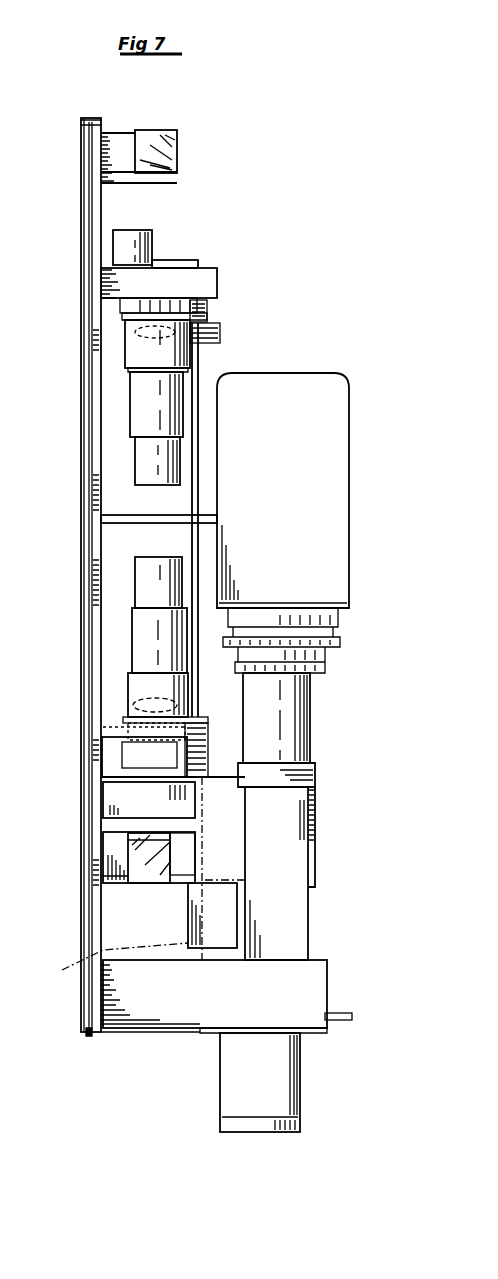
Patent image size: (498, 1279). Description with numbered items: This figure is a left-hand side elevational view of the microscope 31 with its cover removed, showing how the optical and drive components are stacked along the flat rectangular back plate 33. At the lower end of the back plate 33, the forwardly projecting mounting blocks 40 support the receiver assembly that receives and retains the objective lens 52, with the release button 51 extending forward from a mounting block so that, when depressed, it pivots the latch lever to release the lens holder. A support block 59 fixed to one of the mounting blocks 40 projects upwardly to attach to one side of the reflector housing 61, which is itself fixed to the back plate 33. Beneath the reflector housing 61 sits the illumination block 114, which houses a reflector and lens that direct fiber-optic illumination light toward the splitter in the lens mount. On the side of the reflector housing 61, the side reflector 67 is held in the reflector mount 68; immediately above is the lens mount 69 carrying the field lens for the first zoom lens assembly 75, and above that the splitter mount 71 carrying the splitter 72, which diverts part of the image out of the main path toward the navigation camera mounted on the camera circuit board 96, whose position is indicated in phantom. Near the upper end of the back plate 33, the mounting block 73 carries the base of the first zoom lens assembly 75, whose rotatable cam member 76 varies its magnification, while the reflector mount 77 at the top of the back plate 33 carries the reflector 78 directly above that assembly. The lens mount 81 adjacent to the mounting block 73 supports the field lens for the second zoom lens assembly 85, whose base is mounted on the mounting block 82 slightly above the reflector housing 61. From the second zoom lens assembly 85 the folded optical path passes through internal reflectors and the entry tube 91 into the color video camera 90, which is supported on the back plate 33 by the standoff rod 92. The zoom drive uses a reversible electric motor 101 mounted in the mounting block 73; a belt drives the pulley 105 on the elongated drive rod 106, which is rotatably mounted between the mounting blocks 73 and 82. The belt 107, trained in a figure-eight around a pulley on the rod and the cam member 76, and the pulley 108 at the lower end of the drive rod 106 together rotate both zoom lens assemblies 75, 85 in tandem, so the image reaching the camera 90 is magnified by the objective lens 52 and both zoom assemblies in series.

The microscope 31 is at (252, 143).
The back plate 33 is at (80, 393).
The mounting blocks 40 is at (142, 1014).
The release button 51 is at (340, 1013).
The objective lens 52 is at (292, 1082).
The support block 59 is at (300, 935).
The reflector housing 61 is at (318, 827).
The side reflector 67 is at (142, 878).
The reflector mount 68 is at (110, 850).
The lens mount 69 is at (110, 802).
The splitter mount 71 is at (110, 745).
The splitter 72 is at (130, 757).
The mounting block 73 is at (214, 278).
The first zoom lens assembly 75 is at (120, 416).
The rotatable cam member 76 is at (130, 350).
The reflector mount 77 is at (123, 140).
The reflector 78 is at (157, 135).
The lens mount 81 is at (176, 262).
The mounting block 82 is at (205, 765).
The second zoom lens assembly 85 is at (130, 631).
The color video camera 90 is at (340, 440).
The entry tube 91 is at (310, 712).
The standoff rod 92 is at (120, 524).
The camera circuit board 96 is at (112, 960).
The reversible electric motor 101 is at (135, 236).
The pulley 105 is at (220, 340).
The drive rod 106 is at (193, 466).
The belt 107 is at (205, 318).
The pulley 108 is at (196, 716).
The illumination block 114 is at (220, 945).